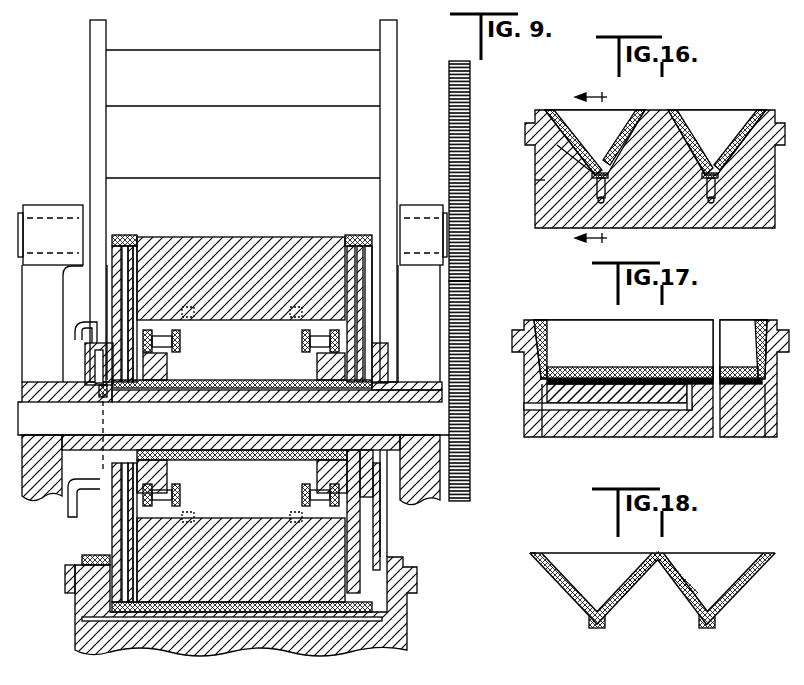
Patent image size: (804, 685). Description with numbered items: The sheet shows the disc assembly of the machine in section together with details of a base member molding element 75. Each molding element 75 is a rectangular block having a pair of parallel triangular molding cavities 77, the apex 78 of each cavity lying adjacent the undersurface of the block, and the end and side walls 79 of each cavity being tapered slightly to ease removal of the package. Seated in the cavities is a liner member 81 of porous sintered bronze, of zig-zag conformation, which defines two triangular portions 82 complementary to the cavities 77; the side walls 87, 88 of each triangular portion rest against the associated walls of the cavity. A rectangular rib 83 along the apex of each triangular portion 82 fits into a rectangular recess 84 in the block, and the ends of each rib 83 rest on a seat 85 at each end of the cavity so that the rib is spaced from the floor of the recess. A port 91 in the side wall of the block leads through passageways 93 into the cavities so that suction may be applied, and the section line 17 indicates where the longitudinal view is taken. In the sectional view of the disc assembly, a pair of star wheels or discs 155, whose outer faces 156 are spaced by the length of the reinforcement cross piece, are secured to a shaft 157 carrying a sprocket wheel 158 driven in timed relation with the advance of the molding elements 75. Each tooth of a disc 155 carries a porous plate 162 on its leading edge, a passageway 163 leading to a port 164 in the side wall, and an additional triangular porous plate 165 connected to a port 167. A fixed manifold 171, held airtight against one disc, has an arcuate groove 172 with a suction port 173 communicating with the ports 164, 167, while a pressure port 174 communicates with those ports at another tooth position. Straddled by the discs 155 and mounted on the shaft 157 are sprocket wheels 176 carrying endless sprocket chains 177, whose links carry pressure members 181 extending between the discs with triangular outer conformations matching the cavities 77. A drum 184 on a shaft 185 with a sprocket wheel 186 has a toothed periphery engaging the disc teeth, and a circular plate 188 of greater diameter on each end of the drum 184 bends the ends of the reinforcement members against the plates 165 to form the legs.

In FIG. 16, the line 17— 17 is at (602, 170).
In FIG. 9, the base member molding element 75 is at (410, 632).
In FIG. 16, the base member molding element 75 is at (535, 180).
In FIG. 17, the base member molding element 75 is at (524, 388).
In FIG. 16, the molding cavity 77 is at (578, 125).
In FIG. 17, the molding cavity 77 is at (672, 337).
In FIG. 16, the apex 78 is at (553, 147).
In FIG. 17, the end and side walls 79 is at (756, 338).
In FIG. 18, the liner member 81 is at (548, 587).
In FIG. 18, the triangular portion 82 is at (580, 568).
In FIG. 18, the rib 83 is at (597, 627).
In FIG. 16, the rectangular recess 84 is at (606, 166).
In FIG. 17, the seat 85 is at (543, 380).
In FIG. 16, the side wall of liner 87 is at (557, 145).
In FIG. 16, the side wall of liner 88 is at (630, 127).
In FIG. 18, the side wall of liner 88 is at (628, 593).
In FIG. 17, the port 91 is at (538, 407).
In FIG. 16, the passageway 93 is at (711, 166).
In FIG. 17, the passageway 93 is at (602, 408).
In FIG. 9, the star wheel or disc 155 is at (123, 232).
In FIG. 9, the outer face 156 is at (377, 315).
In FIG. 9, the shaft 157 is at (240, 410).
In FIG. 9, the sprocket wheel 158 is at (460, 501).
In FIG. 9, the plate 162 is at (133, 243).
In FIG. 9, the passageway 163 is at (130, 256).
In FIG. 9, the port 164 is at (115, 375).
In FIG. 9, the plate 165 is at (112, 275).
In FIG. 9, the port 167 is at (113, 288).
In FIG. 9, the manifold 171 is at (86, 518).
In FIG. 9, the arcuate groove 172 is at (107, 397).
In FIG. 9, the suction port 173 is at (77, 325).
In FIG. 9, the pressure port 174 is at (107, 463).
In FIG. 9, the sprocket wheel 176 is at (167, 468).
In FIG. 9, the sprocket chain 177 is at (157, 495).
In FIG. 9, the pressure member 181 is at (252, 243).
In FIG. 9, the drum 184 is at (203, 62).
In FIG. 9, the shaft 185 is at (415, 227).
In FIG. 9, the sprocket wheel 186 is at (470, 192).
In FIG. 9, the circular plate 188 is at (90, 115).